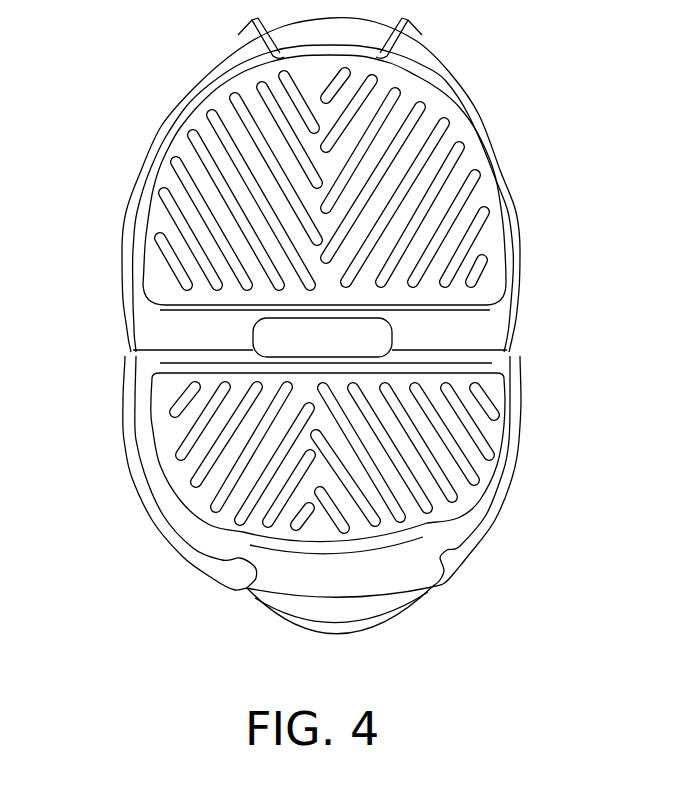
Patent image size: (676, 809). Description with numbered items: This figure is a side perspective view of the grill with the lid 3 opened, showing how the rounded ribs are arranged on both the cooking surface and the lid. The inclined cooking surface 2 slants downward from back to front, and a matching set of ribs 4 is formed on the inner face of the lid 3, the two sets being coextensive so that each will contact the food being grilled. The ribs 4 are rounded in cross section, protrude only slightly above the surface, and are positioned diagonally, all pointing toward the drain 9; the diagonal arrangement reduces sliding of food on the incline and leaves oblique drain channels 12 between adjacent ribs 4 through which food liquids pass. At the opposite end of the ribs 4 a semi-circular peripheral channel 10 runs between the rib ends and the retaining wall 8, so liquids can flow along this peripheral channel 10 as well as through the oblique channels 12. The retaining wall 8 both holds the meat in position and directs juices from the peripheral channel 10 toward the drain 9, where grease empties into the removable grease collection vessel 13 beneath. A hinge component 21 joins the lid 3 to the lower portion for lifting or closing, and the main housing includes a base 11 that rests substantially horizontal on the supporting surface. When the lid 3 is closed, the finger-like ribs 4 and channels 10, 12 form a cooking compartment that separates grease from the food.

The cooking surface 2 is at (175, 388).
The lid 3 is at (240, 58).
The ribs 4 is at (192, 132).
The retaining wall 8 is at (505, 277).
The drain 9 is at (358, 543).
The peripheral channel 10 is at (437, 110).
The base 11 is at (148, 516).
The oblique drain channels 12 is at (314, 340).
The grease collection vessel 13 is at (277, 615).
The hinge component 21 is at (378, 338).